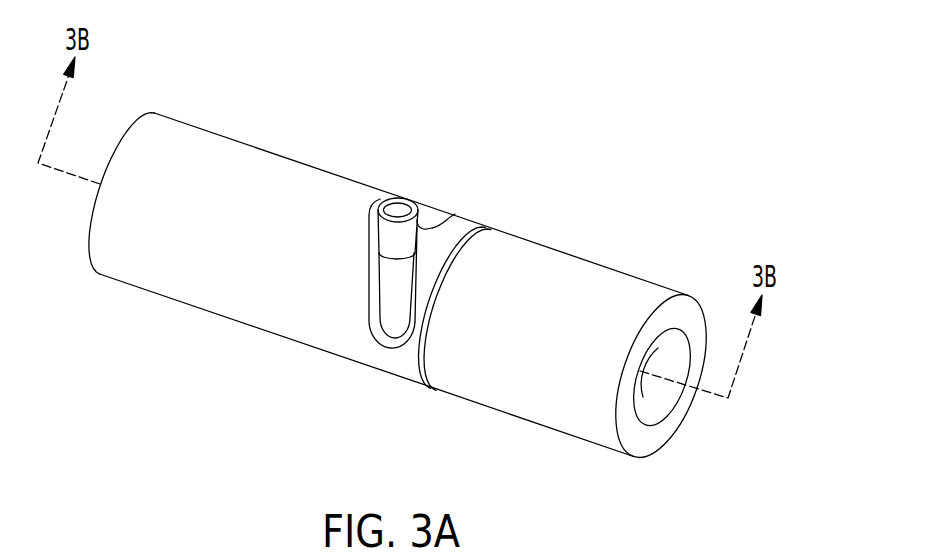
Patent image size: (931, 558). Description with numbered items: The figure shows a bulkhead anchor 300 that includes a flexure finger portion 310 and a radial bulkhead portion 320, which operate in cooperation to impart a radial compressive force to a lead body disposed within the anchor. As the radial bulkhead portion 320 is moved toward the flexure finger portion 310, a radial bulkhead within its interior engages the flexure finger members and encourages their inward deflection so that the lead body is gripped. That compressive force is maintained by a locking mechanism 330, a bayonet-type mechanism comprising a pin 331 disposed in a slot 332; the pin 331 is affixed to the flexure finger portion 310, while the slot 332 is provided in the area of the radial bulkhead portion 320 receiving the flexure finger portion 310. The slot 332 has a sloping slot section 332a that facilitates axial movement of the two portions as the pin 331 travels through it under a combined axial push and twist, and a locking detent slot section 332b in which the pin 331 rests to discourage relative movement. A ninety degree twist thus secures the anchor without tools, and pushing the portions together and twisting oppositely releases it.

The bulkhead anchor 300 is at (407, 253).
The flexure finger portion 310 is at (588, 259).
The radial bulkhead portion 320 is at (322, 168).
The locking mechanism 330 is at (366, 405).
The pin 331 is at (398, 207).
The slot 332 is at (381, 254).
The slot section 332a is at (368, 303).
The slot section 332b is at (447, 215).